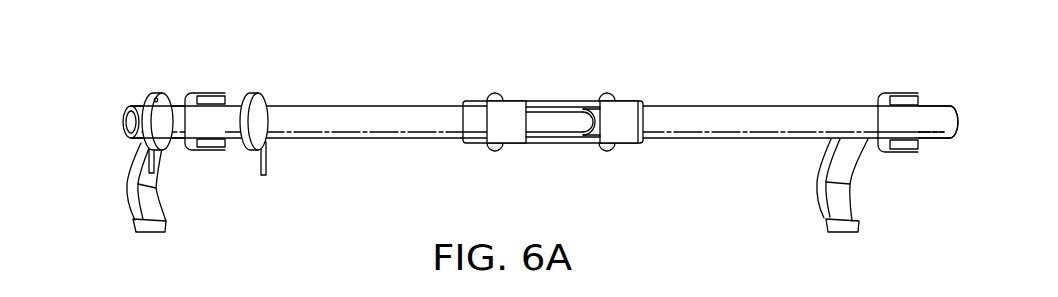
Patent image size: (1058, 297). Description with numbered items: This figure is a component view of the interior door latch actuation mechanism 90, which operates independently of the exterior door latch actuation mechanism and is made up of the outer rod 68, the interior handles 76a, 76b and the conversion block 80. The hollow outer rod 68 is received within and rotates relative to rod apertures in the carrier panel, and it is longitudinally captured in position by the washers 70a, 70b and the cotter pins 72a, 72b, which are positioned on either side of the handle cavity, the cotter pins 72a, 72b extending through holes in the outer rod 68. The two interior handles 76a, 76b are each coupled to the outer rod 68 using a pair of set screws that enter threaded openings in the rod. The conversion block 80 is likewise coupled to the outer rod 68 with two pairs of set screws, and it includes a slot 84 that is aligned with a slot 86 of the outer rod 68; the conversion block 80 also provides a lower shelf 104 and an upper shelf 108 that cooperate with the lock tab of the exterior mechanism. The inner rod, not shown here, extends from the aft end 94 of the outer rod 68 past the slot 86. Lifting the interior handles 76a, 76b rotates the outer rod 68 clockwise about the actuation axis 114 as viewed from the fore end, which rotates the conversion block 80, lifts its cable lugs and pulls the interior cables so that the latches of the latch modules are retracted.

The outer rod 68 is at (360, 106).
The actuation axis 114 is at (150, 123).
The washer 70a is at (159, 93).
The washer 70b is at (261, 93).
The cotter pin 72a is at (153, 164).
The cotter pin 72b is at (266, 160).
The interior handle 76a is at (148, 211).
The interior handle 76b is at (838, 208).
The conversion block 80 is at (631, 118).
The slot 84 is at (594, 143).
The slot 86 is at (569, 118).
The interior door latch actuation mechanism 90 is at (636, 107).
The aft end 94 is at (940, 112).
The lower shelf 104 is at (546, 137).
The upper shelf 108 is at (540, 103).